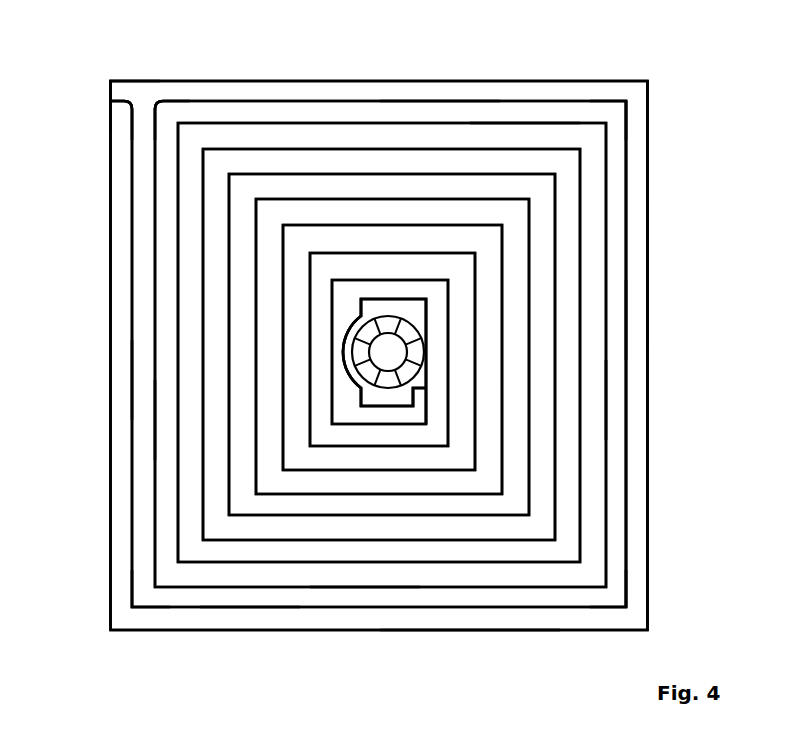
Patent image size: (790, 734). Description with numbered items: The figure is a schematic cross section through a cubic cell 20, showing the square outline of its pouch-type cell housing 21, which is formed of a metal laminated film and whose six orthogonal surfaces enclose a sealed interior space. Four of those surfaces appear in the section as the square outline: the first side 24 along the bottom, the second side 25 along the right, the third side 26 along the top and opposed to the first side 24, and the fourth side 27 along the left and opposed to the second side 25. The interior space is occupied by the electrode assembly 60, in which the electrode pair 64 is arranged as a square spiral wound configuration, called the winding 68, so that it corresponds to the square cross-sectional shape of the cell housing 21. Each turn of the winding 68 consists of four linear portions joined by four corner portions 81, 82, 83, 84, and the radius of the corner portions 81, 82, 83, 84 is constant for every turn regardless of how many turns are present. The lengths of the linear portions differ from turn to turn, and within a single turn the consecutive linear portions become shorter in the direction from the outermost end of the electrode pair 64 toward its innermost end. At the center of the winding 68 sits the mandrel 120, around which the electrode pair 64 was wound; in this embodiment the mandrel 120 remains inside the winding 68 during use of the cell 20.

The cell 20 is at (176, 51).
The cell housing 21 is at (110, 543).
The fourth side 27 is at (379, 355).
The first side 24 is at (473, 630).
The second side 25 is at (650, 272).
The third side 26 is at (125, 80).
The electrode assembly 60 is at (338, 85).
The winding 68 is at (369, 354).
The electrode pair 64 is at (627, 130).
The corner portion 81 is at (132, 608).
The corner portion 82 is at (626, 608).
The corner portion 83 is at (626, 101).
The corner portion 84 is at (160, 98).
The mandrel 120 is at (414, 350).